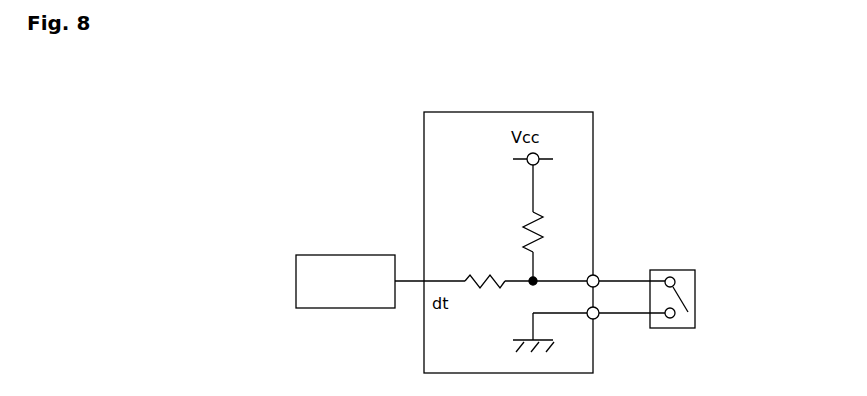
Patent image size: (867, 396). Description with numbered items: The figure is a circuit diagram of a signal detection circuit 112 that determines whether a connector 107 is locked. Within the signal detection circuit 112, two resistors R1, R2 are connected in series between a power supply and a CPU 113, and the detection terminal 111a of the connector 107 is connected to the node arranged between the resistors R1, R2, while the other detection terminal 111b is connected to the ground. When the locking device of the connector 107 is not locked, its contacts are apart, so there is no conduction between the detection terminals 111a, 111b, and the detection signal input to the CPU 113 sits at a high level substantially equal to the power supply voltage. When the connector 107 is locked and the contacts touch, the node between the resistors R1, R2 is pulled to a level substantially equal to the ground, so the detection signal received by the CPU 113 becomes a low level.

The signal detection circuit 112 is at (549, 112).
The CPU 113 is at (350, 255).
The connector 107 is at (705, 286).
The detection terminal 111a is at (675, 281).
The detection terminal 111b is at (675, 316).
The resistor R1 is at (528, 212).
The resistor R2 is at (466, 277).